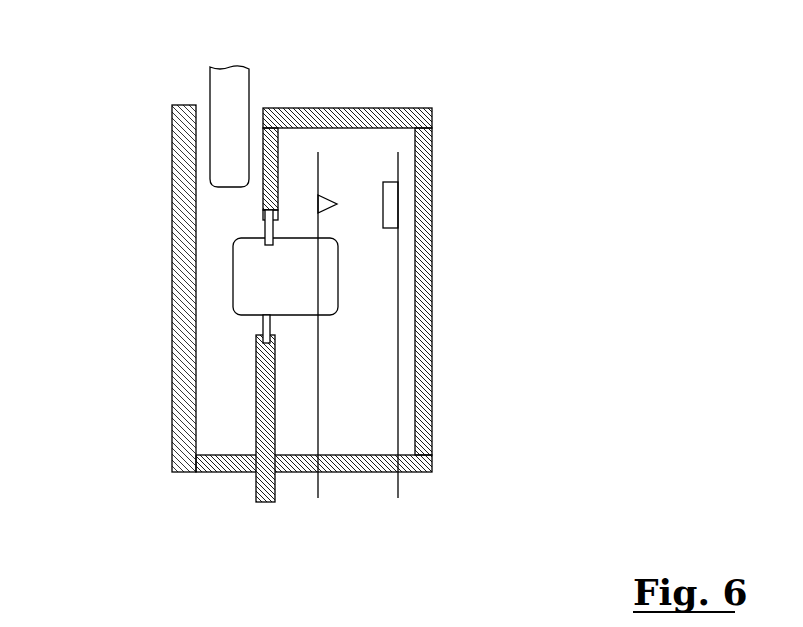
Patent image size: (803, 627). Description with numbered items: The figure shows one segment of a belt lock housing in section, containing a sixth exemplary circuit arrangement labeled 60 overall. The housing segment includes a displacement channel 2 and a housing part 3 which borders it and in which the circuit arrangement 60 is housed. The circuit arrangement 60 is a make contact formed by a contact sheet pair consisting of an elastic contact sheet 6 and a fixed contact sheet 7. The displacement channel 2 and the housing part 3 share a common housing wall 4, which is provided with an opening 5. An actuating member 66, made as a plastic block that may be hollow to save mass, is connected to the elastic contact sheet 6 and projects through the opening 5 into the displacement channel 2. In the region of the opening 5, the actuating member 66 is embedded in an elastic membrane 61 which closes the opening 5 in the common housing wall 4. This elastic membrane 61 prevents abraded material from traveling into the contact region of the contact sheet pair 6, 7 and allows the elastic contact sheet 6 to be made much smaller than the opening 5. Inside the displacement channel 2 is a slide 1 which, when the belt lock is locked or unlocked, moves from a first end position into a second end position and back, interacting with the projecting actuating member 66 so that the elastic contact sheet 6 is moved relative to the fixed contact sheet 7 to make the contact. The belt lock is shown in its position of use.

The slide 1 is at (223, 88).
The displacement channel 2 is at (209, 440).
The housing part 3 is at (354, 145).
The common housing wall 4 is at (263, 420).
The opening 5 is at (253, 325).
The elastic contact sheet 6 is at (317, 405).
The fixed contact sheet 7 is at (393, 375).
The circuit arrangement 60 is at (604, 136).
The elastic membrane 61 is at (268, 227).
The actuating member 66 is at (242, 275).